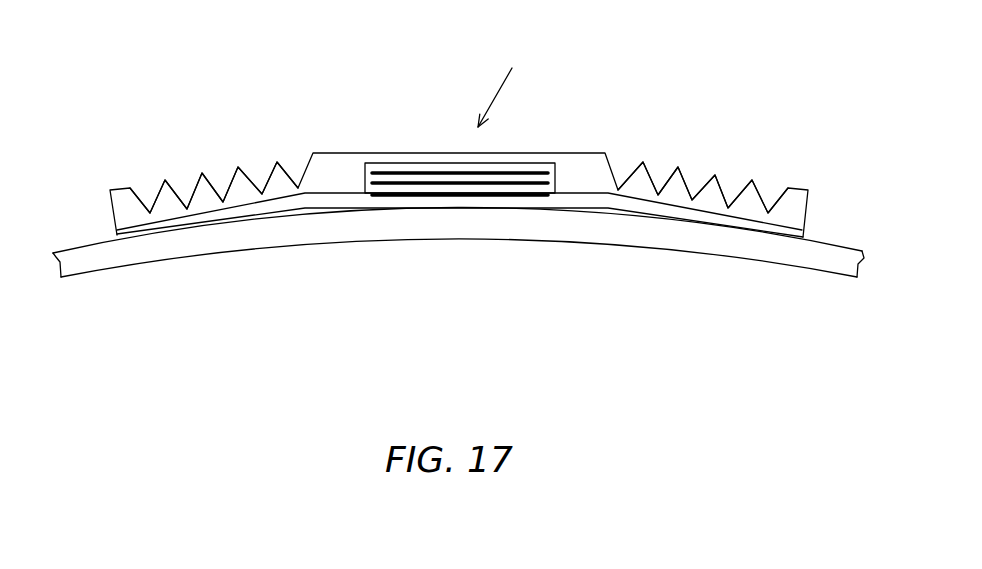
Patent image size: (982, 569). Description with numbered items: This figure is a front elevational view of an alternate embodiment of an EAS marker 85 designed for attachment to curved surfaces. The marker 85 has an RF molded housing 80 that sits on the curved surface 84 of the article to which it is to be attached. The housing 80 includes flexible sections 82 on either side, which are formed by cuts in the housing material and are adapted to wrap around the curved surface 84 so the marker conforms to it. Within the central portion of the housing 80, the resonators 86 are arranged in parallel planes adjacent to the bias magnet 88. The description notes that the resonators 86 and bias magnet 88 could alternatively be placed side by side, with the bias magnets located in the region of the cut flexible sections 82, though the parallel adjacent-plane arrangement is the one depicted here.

The RF molded housing 80 is at (573, 153).
The flexible sections 82 is at (223, 165).
The curved surface 84 is at (302, 242).
The EAS marker 85 is at (553, 23).
The resonators 86 is at (517, 178).
The bias magnet 88 is at (503, 195).